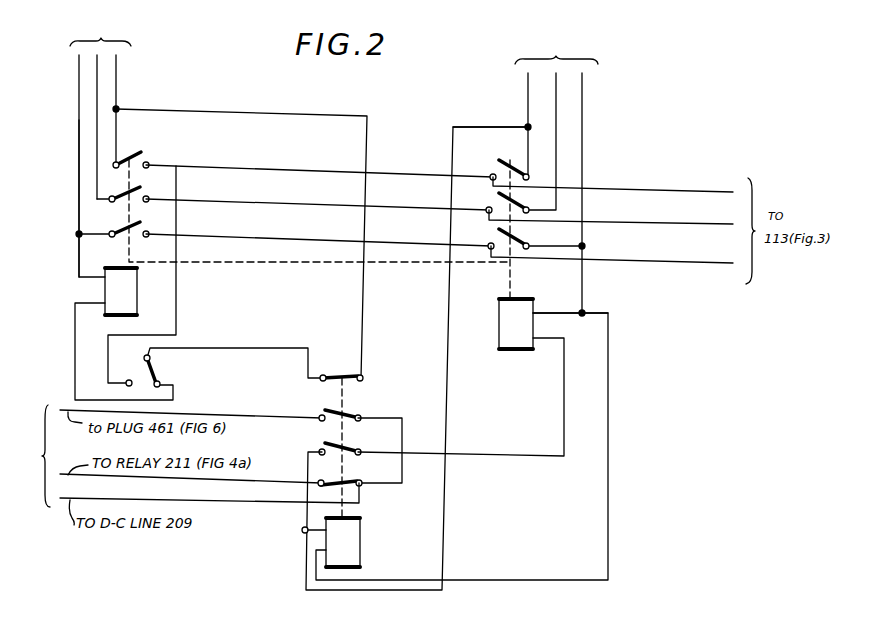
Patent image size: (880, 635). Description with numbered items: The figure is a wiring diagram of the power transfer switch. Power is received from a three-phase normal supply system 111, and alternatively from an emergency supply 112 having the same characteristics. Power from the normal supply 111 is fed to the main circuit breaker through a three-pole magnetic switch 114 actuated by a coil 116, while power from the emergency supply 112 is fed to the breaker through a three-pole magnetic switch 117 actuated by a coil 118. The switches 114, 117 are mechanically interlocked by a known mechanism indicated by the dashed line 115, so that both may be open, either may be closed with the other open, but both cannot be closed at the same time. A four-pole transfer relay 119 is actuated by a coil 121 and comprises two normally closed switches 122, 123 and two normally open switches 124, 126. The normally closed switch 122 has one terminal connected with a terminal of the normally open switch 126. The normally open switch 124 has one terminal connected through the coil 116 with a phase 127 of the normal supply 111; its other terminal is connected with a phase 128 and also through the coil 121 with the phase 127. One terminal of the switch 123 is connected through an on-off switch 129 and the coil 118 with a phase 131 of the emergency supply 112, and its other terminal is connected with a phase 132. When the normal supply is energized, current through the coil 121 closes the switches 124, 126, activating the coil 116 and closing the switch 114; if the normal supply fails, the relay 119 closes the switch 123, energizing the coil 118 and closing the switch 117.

The normal supply system 111 is at (556, 176).
The emergency supply 112 is at (100, 147).
The 3-pole magnetic switch 114 is at (481, 168).
The dashed line 115 is at (318, 266).
The coil 116 is at (500, 327).
The 3-pole magnetic switch 117 is at (150, 161).
The coil 118 is at (120, 293).
The 4-pole transfer relay 119 is at (357, 394).
The coil 121 is at (356, 549).
The normally closed switch 122 is at (338, 482).
The normally closed switch 123 is at (350, 350).
The normally open switch 124 is at (345, 447).
The normally open switch 126 is at (345, 413).
The phase 127 is at (584, 128).
The phase 128 is at (528, 99).
The on-off switch 129 is at (152, 364).
The phase 131 is at (77, 190).
The phase 132 is at (117, 126).